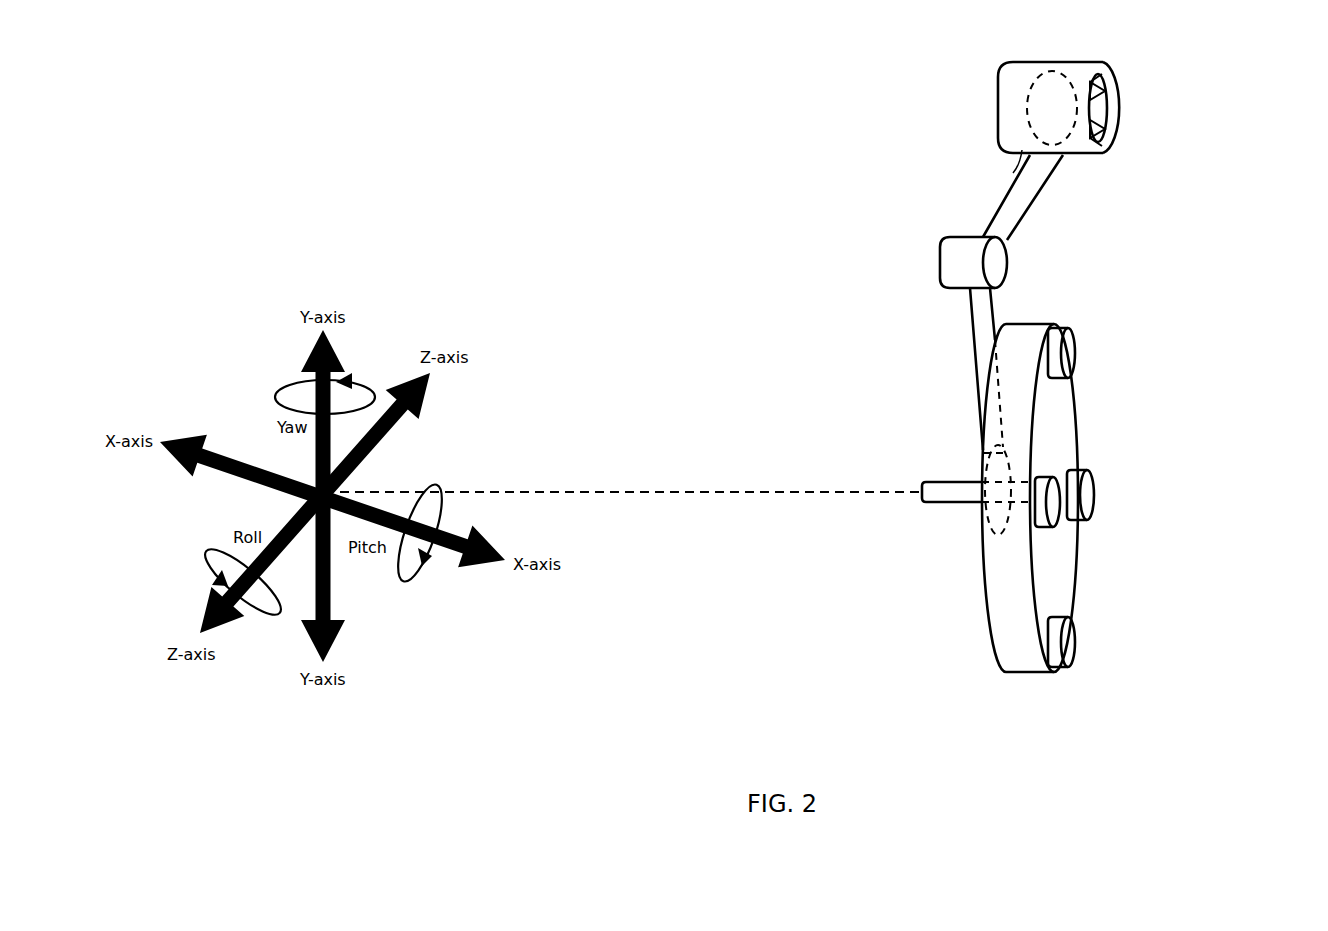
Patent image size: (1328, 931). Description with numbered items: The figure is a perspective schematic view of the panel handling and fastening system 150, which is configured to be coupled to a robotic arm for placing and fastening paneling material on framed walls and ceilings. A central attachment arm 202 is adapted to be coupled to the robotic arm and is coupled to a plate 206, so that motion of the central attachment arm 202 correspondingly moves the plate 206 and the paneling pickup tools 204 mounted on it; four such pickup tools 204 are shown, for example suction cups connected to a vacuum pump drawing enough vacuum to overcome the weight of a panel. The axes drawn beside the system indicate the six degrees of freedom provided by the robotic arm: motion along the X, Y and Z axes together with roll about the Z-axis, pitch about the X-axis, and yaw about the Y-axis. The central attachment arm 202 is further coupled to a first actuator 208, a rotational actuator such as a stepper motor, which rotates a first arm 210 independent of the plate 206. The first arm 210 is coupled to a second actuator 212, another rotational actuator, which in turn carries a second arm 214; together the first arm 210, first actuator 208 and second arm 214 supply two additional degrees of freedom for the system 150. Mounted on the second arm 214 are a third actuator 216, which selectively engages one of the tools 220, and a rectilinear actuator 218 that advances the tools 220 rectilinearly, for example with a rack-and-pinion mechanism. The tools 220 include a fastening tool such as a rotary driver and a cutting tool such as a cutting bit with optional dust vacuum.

The panel handling and fastening system 150 is at (886, 108).
The central attachment arm 202 is at (927, 505).
The paneling pickup tools 204 is at (1078, 338).
The plate 206 is at (1077, 408).
The first actuator 208 is at (993, 537).
The first arm 210 is at (973, 340).
The second actuator 212 is at (947, 285).
The second arm 214 is at (1045, 187).
The third actuator 216 is at (1013, 173).
The rectilinear actuator 218 is at (1113, 108).
The tools 220 is at (1100, 88).